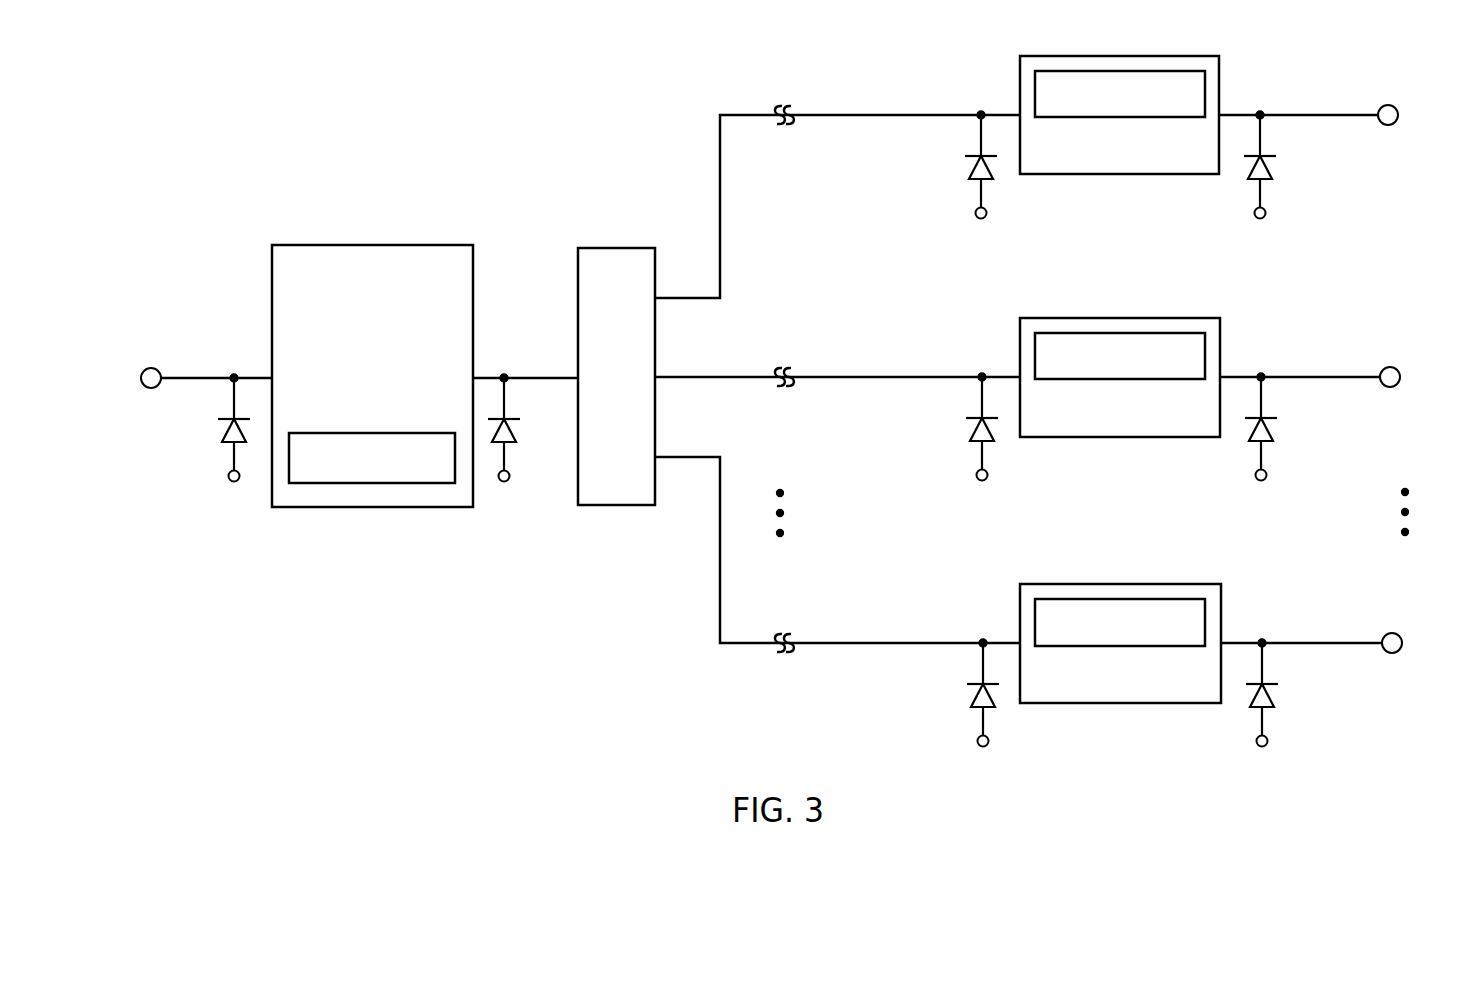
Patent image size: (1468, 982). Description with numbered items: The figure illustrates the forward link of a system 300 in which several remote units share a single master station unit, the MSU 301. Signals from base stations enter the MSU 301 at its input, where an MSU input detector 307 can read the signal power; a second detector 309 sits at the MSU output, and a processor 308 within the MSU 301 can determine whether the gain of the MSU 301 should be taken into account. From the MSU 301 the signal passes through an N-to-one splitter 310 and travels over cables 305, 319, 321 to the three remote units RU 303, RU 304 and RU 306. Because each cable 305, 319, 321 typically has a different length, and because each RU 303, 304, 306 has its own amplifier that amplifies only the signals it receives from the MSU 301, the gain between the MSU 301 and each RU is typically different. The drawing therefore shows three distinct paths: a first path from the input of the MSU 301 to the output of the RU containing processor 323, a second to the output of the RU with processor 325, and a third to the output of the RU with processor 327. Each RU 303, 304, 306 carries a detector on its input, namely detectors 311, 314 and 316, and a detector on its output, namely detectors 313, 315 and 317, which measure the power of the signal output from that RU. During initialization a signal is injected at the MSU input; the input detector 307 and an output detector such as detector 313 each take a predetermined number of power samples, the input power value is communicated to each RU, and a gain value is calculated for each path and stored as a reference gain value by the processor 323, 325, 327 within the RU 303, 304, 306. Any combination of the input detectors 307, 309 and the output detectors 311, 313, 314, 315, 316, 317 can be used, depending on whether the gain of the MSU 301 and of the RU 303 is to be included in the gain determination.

The system 300 is at (797, 397).
The MSU 301 is at (407, 245).
The RU 303 is at (1155, 56).
The RU 304 is at (1155, 318).
The cable 305 is at (860, 115).
The RU 306 is at (1155, 584).
The MSU input detector 307 is at (234, 482).
The processor 308 is at (390, 433).
The input detector 309 is at (504, 482).
The N:1 splitter 310 is at (615, 248).
The input detector 311 is at (981, 219).
The output detector 313 is at (1260, 219).
The input detector 314 is at (982, 481).
The output detector 315 is at (1261, 481).
The input detector 316 is at (983, 747).
The output detector 317 is at (1262, 747).
The cable 319 is at (860, 377).
The cable 321 is at (860, 643).
The processor 323 is at (1205, 83).
The processor 325 is at (1205, 345).
The processor 327 is at (1205, 611).